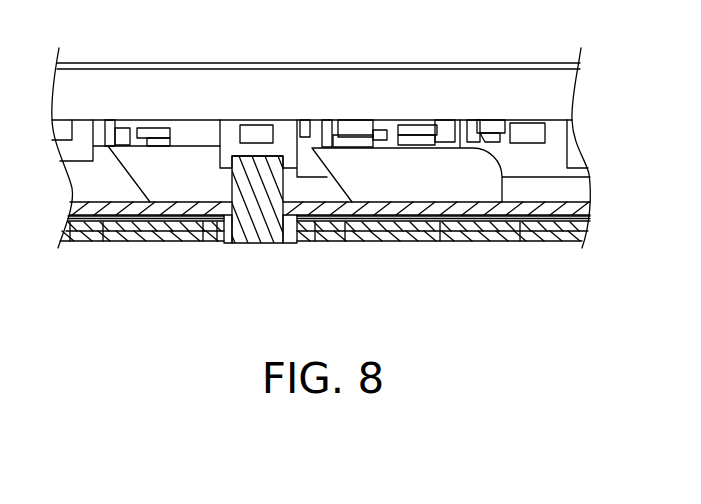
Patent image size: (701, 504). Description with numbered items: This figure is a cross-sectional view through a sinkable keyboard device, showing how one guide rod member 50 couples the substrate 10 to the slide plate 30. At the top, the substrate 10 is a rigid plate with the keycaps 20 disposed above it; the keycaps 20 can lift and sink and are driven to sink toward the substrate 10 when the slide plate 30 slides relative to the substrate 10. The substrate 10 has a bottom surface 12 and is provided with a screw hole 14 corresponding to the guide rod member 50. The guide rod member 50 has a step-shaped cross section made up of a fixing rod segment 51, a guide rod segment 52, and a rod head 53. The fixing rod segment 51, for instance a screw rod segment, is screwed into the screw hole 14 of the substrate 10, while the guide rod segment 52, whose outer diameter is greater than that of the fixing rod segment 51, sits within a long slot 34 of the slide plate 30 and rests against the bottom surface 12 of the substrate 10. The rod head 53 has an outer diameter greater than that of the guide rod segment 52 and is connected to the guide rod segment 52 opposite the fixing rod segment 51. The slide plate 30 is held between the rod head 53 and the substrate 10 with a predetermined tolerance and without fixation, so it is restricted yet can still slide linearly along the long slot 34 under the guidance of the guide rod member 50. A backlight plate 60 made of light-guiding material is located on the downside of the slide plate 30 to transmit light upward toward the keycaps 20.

The substrate 10 is at (385, 243).
The bottom surface 12 is at (157, 243).
The screw hole 14 is at (253, 174).
The keycap 20 is at (93, 76).
The slide plate 30 is at (477, 243).
The long slot 34 is at (430, 243).
The guide rod member 50 is at (259, 249).
The fixing rod segment 51 is at (263, 243).
The guide rod segment 52 is at (230, 243).
The rod head 53 is at (299, 256).
The backlight plate 60 is at (522, 243).